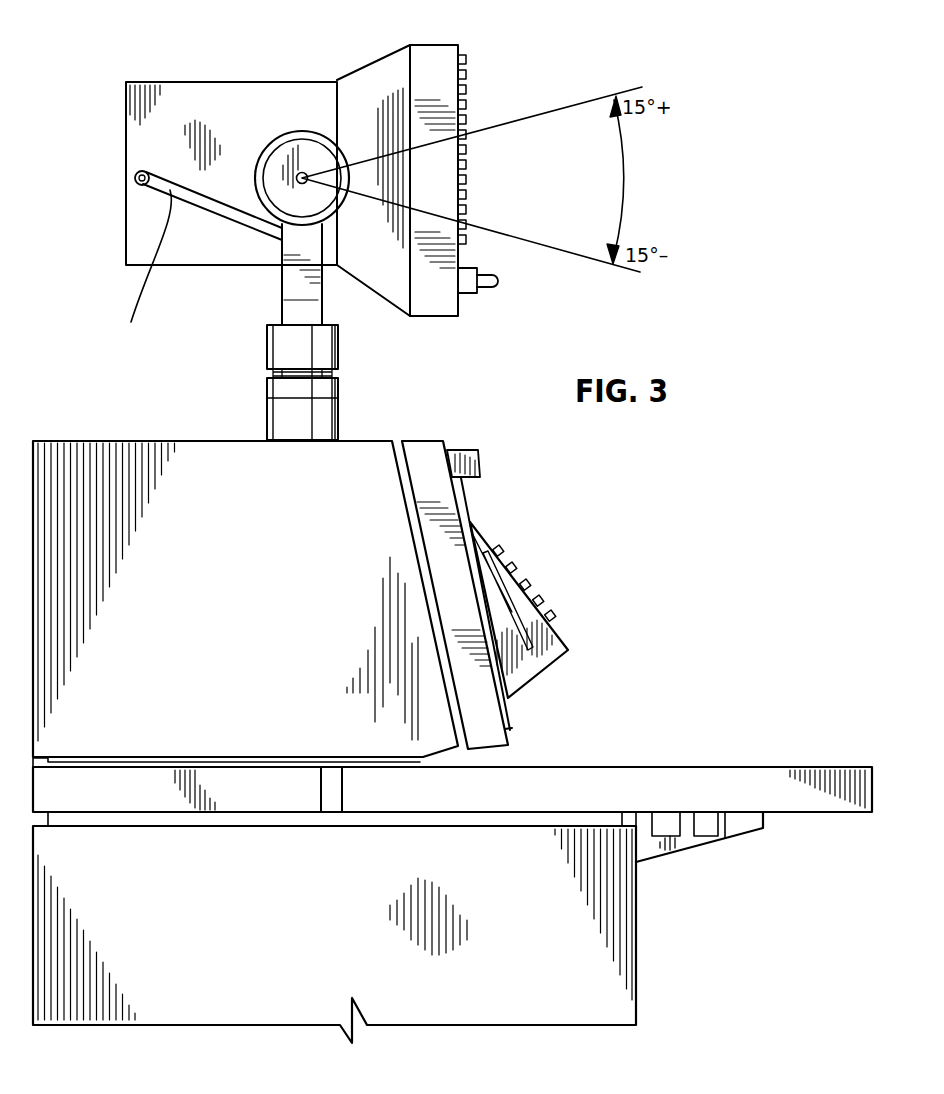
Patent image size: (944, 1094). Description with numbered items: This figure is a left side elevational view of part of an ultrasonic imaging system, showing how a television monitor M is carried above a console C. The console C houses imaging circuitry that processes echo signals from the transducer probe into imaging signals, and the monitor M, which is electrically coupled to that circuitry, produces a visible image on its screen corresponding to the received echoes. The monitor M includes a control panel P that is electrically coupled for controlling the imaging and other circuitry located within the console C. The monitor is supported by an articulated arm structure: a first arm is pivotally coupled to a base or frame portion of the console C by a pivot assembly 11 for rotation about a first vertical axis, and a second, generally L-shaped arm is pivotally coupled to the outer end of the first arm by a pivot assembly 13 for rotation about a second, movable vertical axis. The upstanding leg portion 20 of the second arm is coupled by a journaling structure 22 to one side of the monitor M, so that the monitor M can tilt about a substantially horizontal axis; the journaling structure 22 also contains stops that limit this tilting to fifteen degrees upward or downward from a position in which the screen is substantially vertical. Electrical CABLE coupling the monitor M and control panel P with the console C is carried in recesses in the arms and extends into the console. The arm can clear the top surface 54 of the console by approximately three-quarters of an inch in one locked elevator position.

The journaling structure 22 is at (278, 139).
The upstanding leg portion 20 is at (281, 284).
The pivot assembly 13 is at (340, 350).
The pivot assembly 11 is at (340, 415).
The top surface 54 is at (196, 440).
The monitor M is at (393, 60).
The control panel P is at (476, 104).
The console C is at (508, 731).
The electrical cabling CABLE is at (206, 255).